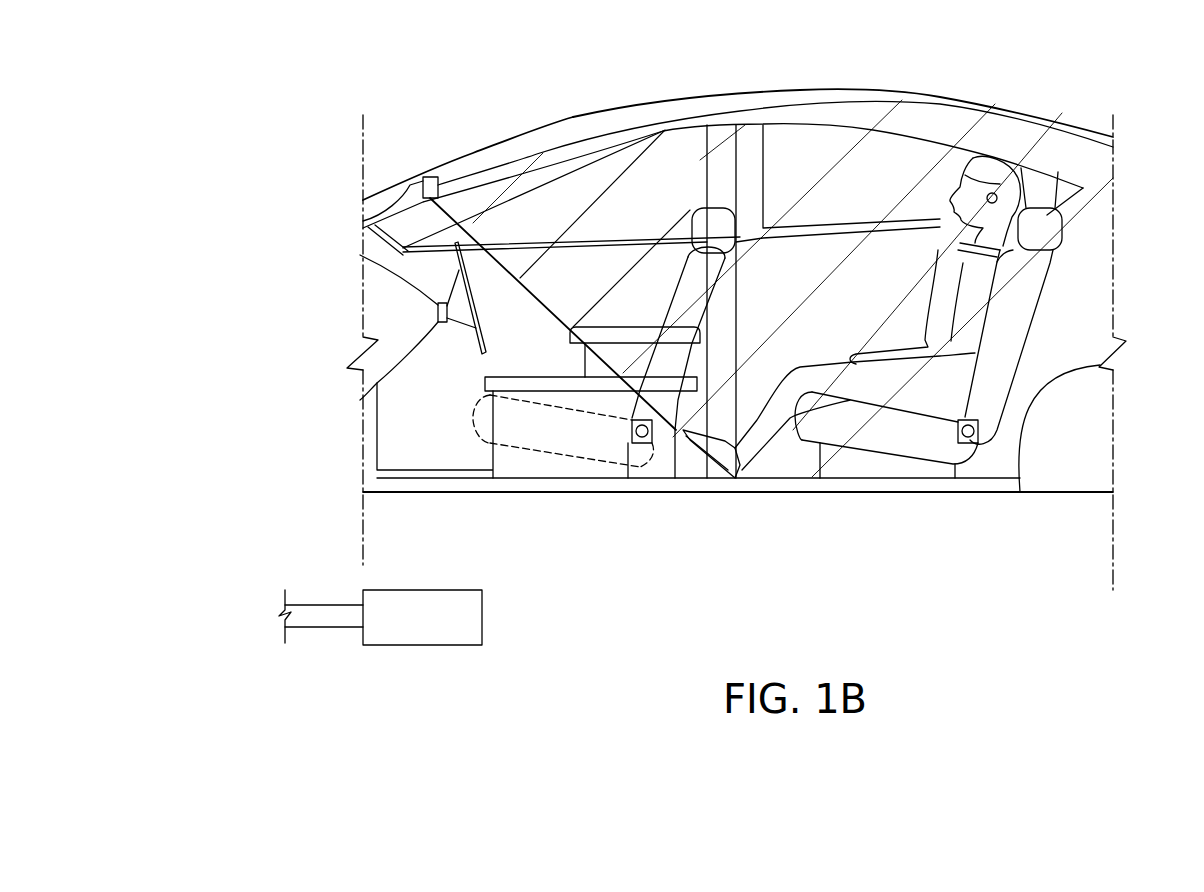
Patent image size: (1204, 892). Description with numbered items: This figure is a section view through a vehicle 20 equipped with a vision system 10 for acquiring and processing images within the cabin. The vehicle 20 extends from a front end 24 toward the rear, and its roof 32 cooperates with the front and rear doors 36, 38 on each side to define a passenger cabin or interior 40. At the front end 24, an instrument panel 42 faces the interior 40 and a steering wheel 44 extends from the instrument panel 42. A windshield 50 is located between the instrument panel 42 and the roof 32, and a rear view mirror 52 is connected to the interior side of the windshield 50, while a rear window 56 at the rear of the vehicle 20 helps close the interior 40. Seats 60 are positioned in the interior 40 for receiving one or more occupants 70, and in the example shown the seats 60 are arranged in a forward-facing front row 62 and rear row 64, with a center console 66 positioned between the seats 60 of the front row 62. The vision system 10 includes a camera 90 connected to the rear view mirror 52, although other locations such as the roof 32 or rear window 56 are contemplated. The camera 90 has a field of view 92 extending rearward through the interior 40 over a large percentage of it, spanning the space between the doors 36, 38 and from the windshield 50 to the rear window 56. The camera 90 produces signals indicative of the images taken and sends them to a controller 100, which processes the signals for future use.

The vision system 10 is at (492, 128).
The vehicle 20 is at (393, 64).
The front end 24 is at (303, 370).
The roof 32 is at (723, 92).
The front door 36 is at (440, 433).
The rear door 38 is at (927, 130).
The interior 40 is at (788, 152).
The instrument panel 42 is at (410, 328).
The steering wheel 44 is at (487, 342).
The windshield 50 is at (465, 152).
The rear view mirror 52 is at (363, 218).
The rear window 56 is at (1030, 117).
The seats 60 is at (698, 272).
The front row 62 is at (603, 486).
The rear row 64 is at (892, 483).
The center console 66 is at (540, 385).
The occupant 70 is at (997, 264).
The camera 90 is at (425, 177).
The field of view 92 is at (665, 148).
The controller 100 is at (380, 617).